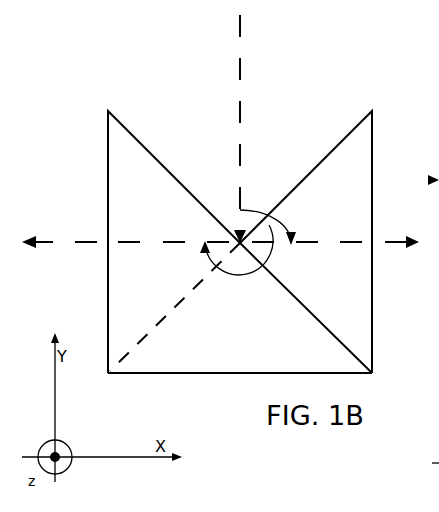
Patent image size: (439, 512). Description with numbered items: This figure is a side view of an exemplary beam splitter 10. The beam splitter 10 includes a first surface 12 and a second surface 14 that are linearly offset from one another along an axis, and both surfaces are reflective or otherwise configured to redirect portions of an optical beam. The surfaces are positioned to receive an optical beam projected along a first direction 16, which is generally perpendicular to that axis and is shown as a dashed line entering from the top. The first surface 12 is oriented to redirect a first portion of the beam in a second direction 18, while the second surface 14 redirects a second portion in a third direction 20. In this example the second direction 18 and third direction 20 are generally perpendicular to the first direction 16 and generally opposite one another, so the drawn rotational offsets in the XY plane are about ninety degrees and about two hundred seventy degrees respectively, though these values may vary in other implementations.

The beam splitter 10 is at (301, 106).
The first surface 12 is at (136, 134).
The second surface 14 is at (306, 175).
The first direction 16 is at (237, 72).
The second direction 18 is at (390, 242).
The third direction 20 is at (78, 242).